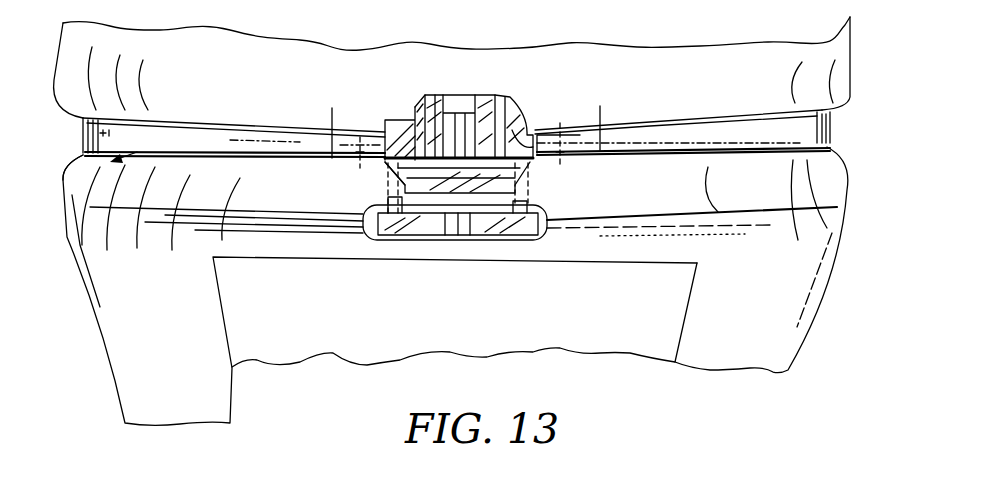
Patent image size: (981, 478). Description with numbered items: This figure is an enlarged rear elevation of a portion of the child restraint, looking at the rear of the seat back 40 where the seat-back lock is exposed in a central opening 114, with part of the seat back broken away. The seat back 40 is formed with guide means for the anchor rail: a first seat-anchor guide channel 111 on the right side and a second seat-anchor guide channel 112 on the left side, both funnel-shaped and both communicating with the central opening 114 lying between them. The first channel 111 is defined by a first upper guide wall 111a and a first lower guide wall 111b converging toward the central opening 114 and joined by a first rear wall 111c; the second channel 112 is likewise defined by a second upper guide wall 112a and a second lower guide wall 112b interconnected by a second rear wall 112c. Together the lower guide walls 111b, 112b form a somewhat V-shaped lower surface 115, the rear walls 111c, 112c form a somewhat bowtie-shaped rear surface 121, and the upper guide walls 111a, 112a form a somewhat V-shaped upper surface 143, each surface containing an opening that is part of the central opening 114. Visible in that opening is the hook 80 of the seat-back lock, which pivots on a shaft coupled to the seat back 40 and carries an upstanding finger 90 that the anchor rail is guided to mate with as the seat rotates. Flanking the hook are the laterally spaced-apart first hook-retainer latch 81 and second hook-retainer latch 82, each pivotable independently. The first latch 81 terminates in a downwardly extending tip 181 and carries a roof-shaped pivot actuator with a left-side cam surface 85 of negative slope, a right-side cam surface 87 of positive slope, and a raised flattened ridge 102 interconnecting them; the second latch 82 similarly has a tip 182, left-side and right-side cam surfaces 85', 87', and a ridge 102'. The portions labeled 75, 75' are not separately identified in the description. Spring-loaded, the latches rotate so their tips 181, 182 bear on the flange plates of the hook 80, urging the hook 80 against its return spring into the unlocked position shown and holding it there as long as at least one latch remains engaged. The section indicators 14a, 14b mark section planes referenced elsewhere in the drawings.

The seat back 40 is at (642, 39).
The upper surface 143 is at (83, 130).
The first rear wall 111c is at (800, 127).
The second upper guide wall 112a is at (145, 128).
The first upper guide wall 111a is at (690, 128).
The rear surface 121 is at (250, 142).
The second seat-anchor guide channel 112 is at (140, 170).
The second lower guide wall 112b is at (185, 165).
The second rear wall 112c is at (83, 137).
The lower surface 115 is at (83, 153).
The first seat-anchor guide channel 111 is at (738, 160).
The first lower guide wall 111b is at (847, 195).
The first hook-retainer latch 81 is at (510, 93).
The second hook-retainer latch 82 is at (410, 91).
The right-side cam surface 87 is at (528, 113).
The right-side cam surface 87' is at (430, 84).
The left-side cam surface 85 is at (472, 81).
The left-side cam surface 85' is at (389, 120).
The ridge 102 is at (509, 90).
The ridge 102' is at (362, 79).
The central opening 114 is at (520, 147).
The lower bracket 75 is at (485, 191).
The lower bracket portion 75' is at (358, 187).
The hook 80 is at (435, 253).
The tip 182 is at (375, 222).
The tip 181 is at (516, 220).
The finger 90 is at (484, 184).
The section line 14a is at (465, 159).
The section line 14b is at (470, 115).